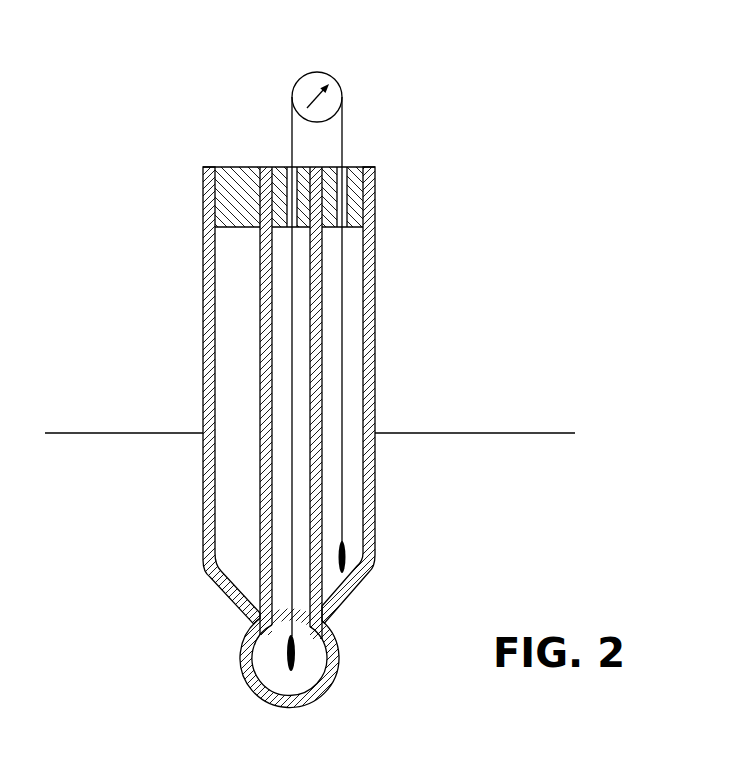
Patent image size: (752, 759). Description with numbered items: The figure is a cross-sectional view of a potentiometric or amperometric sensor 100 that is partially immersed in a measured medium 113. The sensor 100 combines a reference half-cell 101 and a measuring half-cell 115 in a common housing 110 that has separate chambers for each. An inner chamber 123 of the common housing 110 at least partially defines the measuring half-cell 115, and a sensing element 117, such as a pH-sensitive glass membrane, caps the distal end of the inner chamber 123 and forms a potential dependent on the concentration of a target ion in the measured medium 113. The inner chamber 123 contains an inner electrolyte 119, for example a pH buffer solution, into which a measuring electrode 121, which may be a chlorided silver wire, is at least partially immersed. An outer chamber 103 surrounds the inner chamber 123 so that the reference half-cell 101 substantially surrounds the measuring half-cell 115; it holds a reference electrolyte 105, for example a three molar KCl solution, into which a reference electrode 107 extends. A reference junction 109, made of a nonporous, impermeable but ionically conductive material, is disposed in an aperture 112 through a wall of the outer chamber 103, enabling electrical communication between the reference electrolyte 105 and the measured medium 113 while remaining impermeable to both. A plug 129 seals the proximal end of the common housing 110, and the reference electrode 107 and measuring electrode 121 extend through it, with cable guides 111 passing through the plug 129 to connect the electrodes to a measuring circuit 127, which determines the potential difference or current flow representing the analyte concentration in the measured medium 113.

The sensor 100 is at (512, 215).
The reference half-cell 101 is at (160, 360).
The outer chamber 103 is at (352, 410).
The reference electrolyte 105 is at (227, 272).
The reference electrode 107 is at (343, 341).
The reference junction 109 is at (212, 578).
The common housing 110 is at (372, 302).
The cable guides 111 is at (343, 200).
The aperture 112 is at (205, 565).
The measured medium 113 is at (600, 493).
The measuring half-cell 115 is at (322, 246).
The sensing element 117 is at (248, 683).
The inner electrolyte 119 is at (313, 664).
The measuring electrode 121 is at (293, 652).
The inner chamber 123 is at (302, 500).
The measuring circuit 127 is at (342, 95).
The plug 129 is at (237, 172).